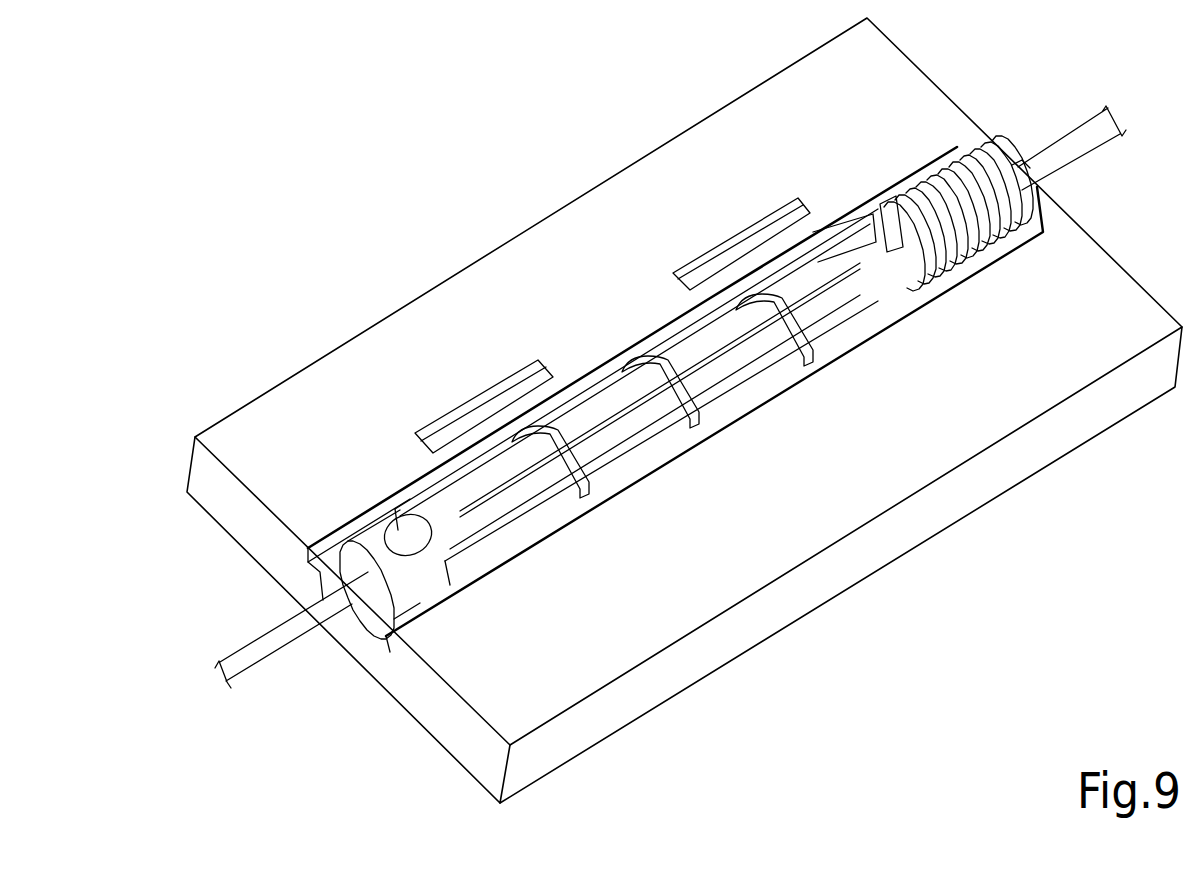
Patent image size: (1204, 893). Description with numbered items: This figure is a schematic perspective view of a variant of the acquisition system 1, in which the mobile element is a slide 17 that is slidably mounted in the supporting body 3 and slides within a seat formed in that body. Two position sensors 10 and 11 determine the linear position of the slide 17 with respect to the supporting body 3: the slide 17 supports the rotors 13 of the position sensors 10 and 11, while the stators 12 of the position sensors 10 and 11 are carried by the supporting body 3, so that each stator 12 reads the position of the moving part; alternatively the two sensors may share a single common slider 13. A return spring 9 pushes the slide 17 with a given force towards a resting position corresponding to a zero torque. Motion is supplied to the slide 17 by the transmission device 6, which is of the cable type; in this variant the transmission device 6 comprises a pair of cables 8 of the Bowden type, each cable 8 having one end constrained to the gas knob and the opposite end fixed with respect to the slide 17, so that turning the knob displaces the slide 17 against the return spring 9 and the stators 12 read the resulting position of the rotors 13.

The acquisition system 1 is at (362, 165).
The supporting body 3 is at (853, 570).
The transmission device 6 is at (207, 603).
The cable 8 is at (1073, 145).
The return spring 9 is at (945, 170).
The position sensor 10 is at (460, 338).
The position sensor 11 is at (733, 185).
The stator 12 is at (717, 255).
The rotor 13 is at (513, 515).
The slide 17 is at (445, 645).